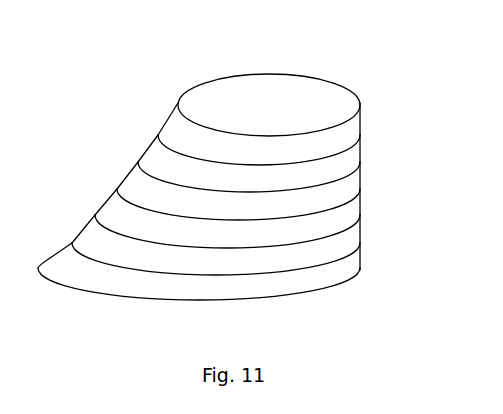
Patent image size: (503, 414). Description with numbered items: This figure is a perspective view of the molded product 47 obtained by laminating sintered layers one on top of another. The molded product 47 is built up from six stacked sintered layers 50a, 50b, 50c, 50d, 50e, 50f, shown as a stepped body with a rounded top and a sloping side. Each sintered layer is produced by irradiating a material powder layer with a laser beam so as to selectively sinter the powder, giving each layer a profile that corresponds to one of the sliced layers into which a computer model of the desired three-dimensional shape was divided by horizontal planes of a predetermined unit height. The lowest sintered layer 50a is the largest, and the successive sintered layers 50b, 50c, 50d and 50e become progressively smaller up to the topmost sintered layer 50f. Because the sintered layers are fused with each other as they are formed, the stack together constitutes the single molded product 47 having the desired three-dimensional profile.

The molded product 47 is at (264, 159).
The sintered layer 50a is at (360, 263).
The sintered layer 50b is at (360, 237).
The sintered layer 50c is at (360, 210).
The sintered layer 50d is at (360, 187).
The sintered layer 50e is at (360, 160).
The sintered layer 50f is at (360, 132).